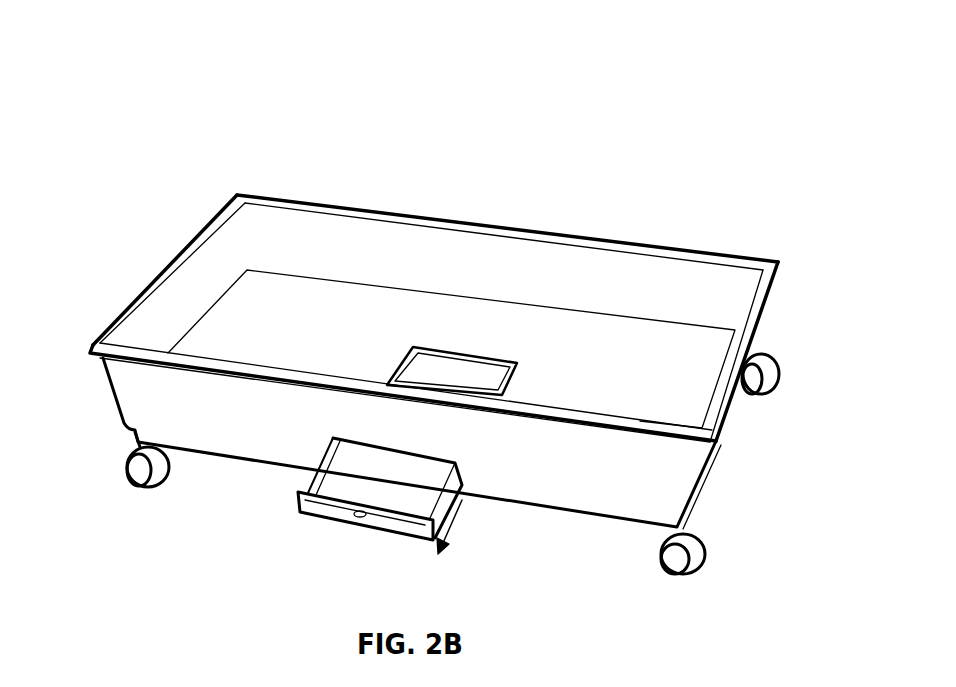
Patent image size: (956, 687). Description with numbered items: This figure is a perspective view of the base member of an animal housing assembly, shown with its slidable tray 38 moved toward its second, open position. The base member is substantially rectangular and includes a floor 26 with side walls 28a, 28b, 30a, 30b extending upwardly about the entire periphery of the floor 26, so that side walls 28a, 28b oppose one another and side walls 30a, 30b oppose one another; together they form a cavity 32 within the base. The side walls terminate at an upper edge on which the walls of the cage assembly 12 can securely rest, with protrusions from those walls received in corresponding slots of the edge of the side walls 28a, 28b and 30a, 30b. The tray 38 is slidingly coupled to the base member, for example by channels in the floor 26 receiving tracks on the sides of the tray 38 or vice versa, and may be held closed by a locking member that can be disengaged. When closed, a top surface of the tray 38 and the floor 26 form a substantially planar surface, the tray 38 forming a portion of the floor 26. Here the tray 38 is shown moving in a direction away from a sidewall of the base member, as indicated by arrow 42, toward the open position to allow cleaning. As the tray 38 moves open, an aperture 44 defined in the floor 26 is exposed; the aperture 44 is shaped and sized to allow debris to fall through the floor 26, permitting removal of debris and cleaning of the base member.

The cage assembly 12 is at (150, 98).
The floor 26 is at (633, 348).
The side wall 28a is at (197, 354).
The side wall 28b is at (364, 206).
The side wall 30a is at (184, 238).
The side wall 30b is at (758, 318).
The cavity 32 is at (266, 313).
The slidable tray 38 is at (338, 514).
The arrow 42 is at (460, 527).
The aperture 44 is at (448, 378).